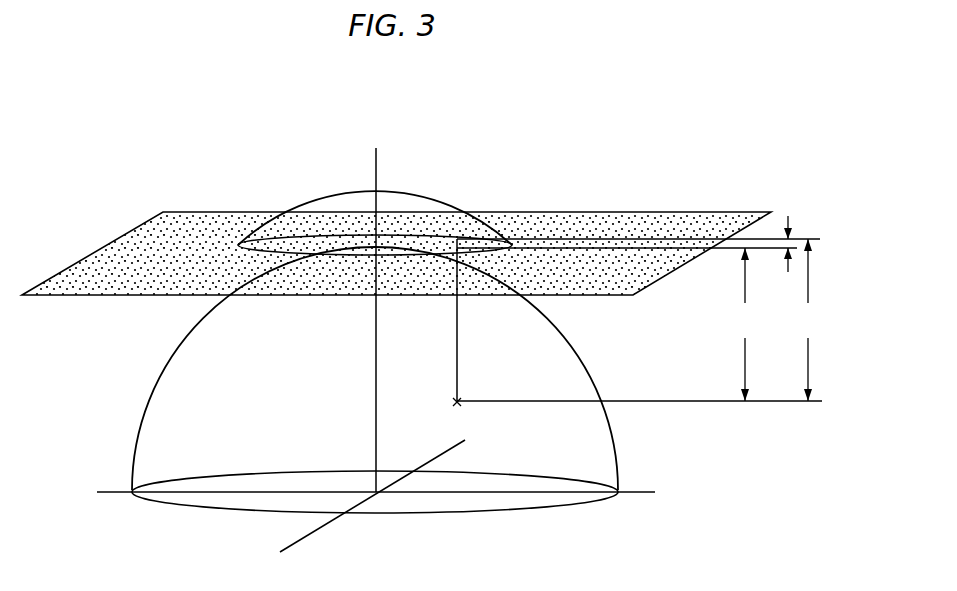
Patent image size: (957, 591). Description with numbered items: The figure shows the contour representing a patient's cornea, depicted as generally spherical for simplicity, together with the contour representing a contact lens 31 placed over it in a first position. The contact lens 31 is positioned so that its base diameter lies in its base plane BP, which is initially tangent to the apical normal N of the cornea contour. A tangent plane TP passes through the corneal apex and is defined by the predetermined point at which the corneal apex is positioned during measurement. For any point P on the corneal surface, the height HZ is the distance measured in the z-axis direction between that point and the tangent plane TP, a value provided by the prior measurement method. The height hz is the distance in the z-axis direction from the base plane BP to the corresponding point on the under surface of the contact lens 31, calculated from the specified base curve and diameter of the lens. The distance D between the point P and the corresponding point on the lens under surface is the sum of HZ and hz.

The contact lens 31 is at (398, 191).
The base plane BP is at (280, 239).
The tangent plane TP is at (396, 253).
The apical normal N is at (370, 176).
The point on the corneal surface P is at (462, 406).
The height Hz HZ is at (745, 324).
The distance D is at (810, 320).
The height hz is at (789, 224).